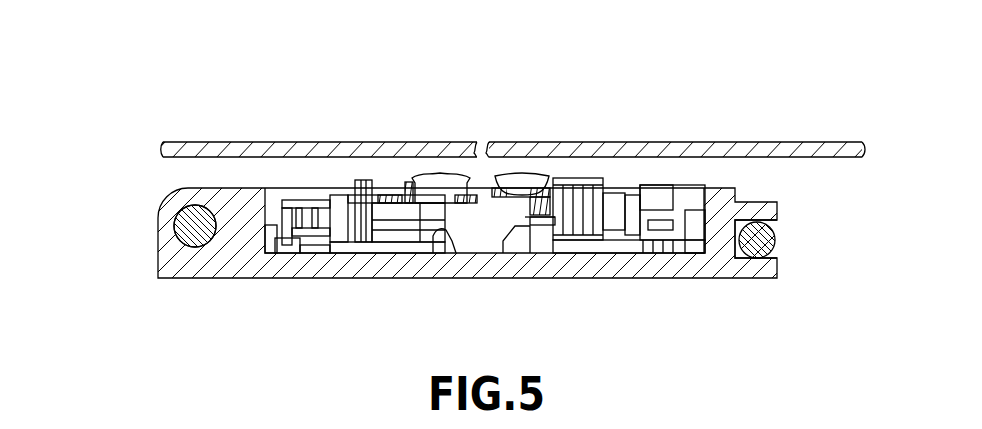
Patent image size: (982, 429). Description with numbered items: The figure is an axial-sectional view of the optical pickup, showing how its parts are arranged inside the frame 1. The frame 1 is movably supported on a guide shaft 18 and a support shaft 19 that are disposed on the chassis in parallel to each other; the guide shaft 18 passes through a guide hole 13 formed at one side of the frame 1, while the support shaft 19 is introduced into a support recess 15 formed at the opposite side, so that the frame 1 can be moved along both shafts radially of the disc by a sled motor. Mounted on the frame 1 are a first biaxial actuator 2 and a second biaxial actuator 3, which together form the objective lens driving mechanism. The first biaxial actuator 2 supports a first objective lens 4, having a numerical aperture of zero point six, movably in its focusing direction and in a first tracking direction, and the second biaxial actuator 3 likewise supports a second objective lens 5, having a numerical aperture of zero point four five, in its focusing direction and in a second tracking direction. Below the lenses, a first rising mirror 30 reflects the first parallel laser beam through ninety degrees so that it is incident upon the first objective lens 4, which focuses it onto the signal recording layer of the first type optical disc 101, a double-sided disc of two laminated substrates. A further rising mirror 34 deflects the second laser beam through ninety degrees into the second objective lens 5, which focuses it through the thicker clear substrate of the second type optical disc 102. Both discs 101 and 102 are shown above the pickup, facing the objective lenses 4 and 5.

The frame 1 is at (730, 191).
The first biaxial actuator 2 is at (630, 183).
The second biaxial actuator 3 is at (340, 183).
The first objective lens 4 is at (527, 173).
The second objective lens 5 is at (448, 174).
The guide hole 13 is at (176, 229).
The support recess 15 is at (773, 231).
The guide shaft 18 is at (197, 246).
The support shaft 19 is at (773, 246).
The first rising mirror 30 is at (515, 244).
The rising mirror 34 is at (445, 244).
The optical disc of the first type 101 is at (783, 142).
The optical disc of the second type 102 is at (255, 145).